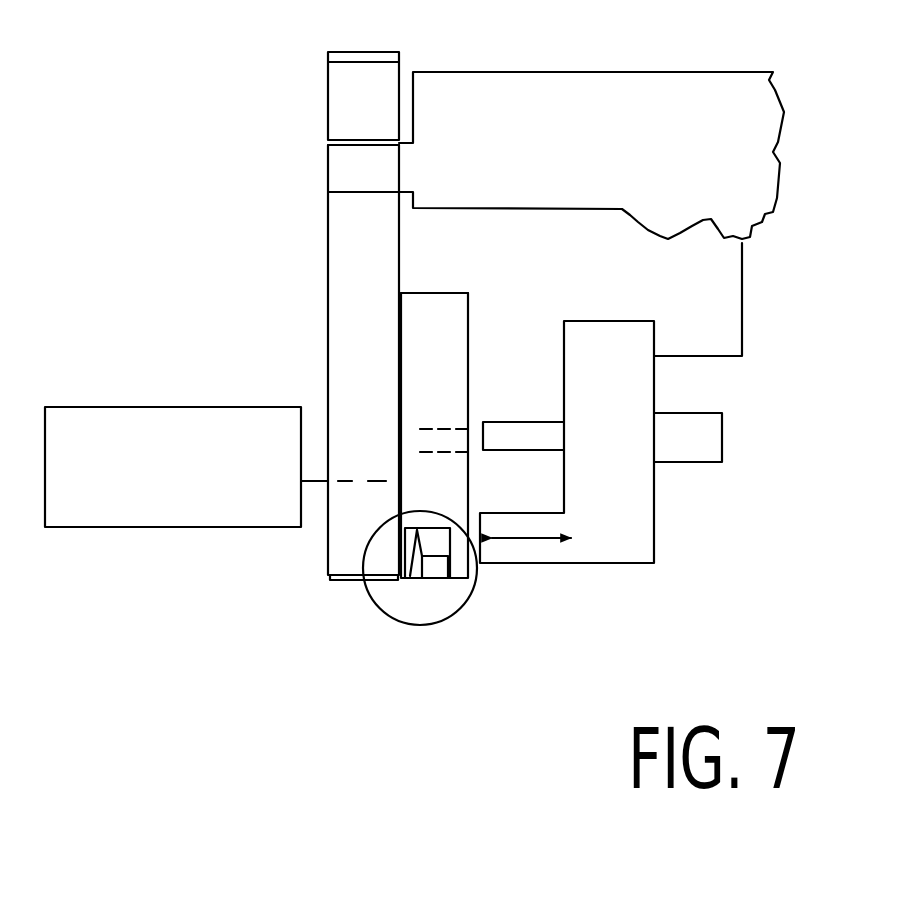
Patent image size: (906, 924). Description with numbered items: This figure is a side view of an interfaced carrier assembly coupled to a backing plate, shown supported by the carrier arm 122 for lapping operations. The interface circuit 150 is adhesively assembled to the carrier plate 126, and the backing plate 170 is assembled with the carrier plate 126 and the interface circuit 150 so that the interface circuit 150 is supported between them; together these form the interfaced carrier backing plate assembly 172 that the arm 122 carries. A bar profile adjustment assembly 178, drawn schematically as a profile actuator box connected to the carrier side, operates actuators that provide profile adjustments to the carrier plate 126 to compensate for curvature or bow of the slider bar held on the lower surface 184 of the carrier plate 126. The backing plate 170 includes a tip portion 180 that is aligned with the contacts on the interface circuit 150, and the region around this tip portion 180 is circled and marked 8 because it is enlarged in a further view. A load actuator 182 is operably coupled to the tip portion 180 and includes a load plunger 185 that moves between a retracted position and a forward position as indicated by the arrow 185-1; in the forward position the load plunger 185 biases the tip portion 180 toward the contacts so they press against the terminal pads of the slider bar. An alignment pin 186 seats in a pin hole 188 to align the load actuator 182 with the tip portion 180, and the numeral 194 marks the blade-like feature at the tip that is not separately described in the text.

The arm 122 is at (531, 66).
The carrier plate 126 is at (358, 89).
The interface circuit 150 is at (328, 232).
The backing plate 170 is at (468, 311).
The interfaced carrier backing plate assembly 172 is at (431, 287).
The bar profile adjustment assembly 178 is at (132, 398).
The tip portion 180 is at (448, 544).
The load actuator 182 is at (727, 440).
The lower surface 184 is at (330, 578).
The load plunger 185 is at (512, 552).
The arrow 185-1 is at (572, 540).
The alignment pin 186 is at (503, 428).
The pin hole 188 is at (437, 421).
The profiling blade 194 is at (430, 545).
The detail area of FIG. 8 is at (455, 615).